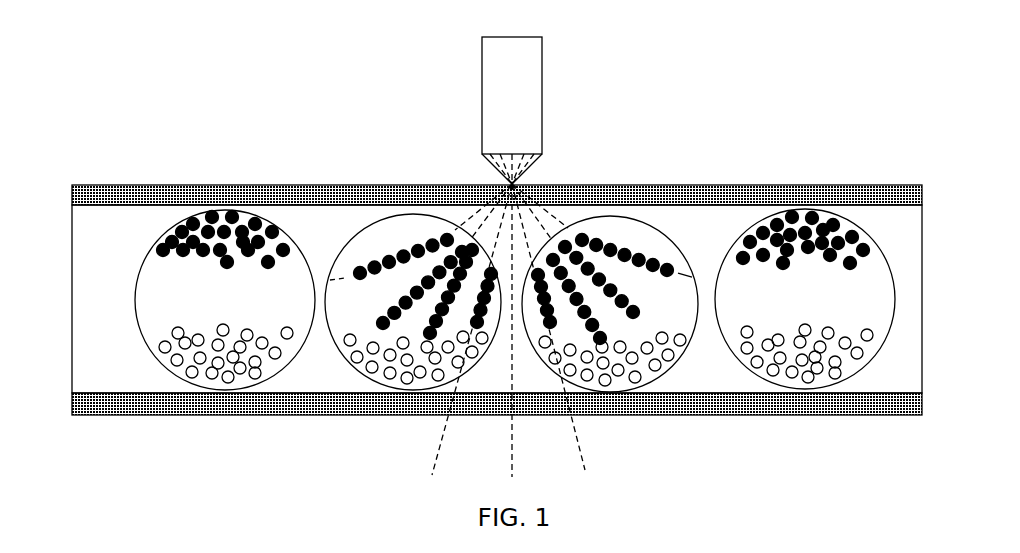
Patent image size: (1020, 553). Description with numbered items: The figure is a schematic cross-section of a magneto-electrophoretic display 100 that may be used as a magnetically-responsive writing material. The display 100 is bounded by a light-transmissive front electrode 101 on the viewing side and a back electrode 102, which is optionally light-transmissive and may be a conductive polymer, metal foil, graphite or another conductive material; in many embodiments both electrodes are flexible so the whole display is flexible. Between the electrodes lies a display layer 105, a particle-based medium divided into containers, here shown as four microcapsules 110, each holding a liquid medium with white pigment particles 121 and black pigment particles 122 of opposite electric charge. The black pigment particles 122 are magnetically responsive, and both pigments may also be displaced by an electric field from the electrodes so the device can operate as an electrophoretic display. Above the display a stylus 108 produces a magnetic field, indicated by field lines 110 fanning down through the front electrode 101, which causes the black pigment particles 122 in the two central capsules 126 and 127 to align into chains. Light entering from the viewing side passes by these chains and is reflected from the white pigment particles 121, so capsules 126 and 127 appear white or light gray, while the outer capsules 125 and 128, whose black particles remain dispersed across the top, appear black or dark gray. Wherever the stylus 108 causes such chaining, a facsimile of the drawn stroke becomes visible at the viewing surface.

The display 100 is at (180, 148).
The front electrode 101 is at (72, 193).
The back electrode 102 is at (97, 405).
The display layer 105 is at (98, 303).
The stylus 108 is at (488, 100).
The microcapsules 110 is at (840, 217).
The white pigment particles 121 is at (408, 382).
The black pigment particles 122 is at (385, 258).
The capsule 125 is at (263, 213).
The capsule 126 is at (417, 225).
The capsule 127 is at (640, 228).
The capsule 128 is at (770, 217).